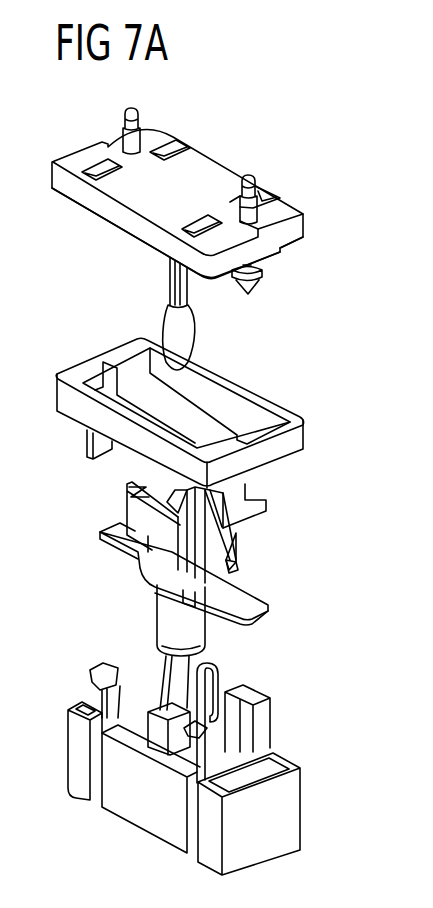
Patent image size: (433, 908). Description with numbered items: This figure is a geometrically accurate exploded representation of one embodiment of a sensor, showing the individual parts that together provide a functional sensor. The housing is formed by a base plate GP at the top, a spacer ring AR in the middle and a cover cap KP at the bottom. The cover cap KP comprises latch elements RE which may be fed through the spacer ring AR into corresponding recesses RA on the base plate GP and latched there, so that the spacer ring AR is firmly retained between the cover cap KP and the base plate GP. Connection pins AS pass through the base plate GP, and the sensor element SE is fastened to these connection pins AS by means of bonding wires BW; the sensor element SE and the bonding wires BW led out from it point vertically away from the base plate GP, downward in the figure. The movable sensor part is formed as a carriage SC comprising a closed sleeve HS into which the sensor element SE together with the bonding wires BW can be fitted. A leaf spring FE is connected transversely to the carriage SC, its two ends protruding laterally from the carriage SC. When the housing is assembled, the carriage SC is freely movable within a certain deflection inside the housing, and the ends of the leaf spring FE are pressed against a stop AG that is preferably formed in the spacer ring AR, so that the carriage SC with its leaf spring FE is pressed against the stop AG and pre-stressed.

The recesses RA is at (100, 165).
The connection pins AS is at (252, 176).
The base plate GP is at (302, 230).
The bonding wires BW is at (168, 282).
The sensor element SE is at (188, 342).
The spacer ring AR is at (300, 440).
The stop AG is at (262, 510).
The carriage SC is at (230, 568).
The leaf spring FE is at (258, 603).
The sleeve HS is at (203, 641).
The latch elements RE is at (260, 723).
The cover cap KP is at (287, 804).